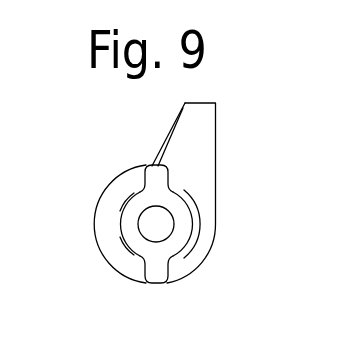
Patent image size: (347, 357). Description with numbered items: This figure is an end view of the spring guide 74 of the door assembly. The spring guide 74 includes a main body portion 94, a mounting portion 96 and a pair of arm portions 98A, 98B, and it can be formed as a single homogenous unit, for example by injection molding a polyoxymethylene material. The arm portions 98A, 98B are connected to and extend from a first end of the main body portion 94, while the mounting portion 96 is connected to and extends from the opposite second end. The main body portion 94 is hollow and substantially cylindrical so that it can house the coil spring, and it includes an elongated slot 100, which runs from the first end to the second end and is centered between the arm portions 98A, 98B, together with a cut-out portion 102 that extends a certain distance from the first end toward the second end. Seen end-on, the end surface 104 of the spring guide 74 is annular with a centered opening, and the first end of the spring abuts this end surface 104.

The spring guide 74 is at (250, 117).
The main body portion 94 is at (182, 264).
The mounting portion 96 is at (200, 146).
The arm portion 98A is at (140, 192).
The arm portion 98B is at (165, 270).
The elongated slot 100 is at (123, 223).
The cut-out portion 102 is at (143, 182).
The end surface 104 is at (178, 222).